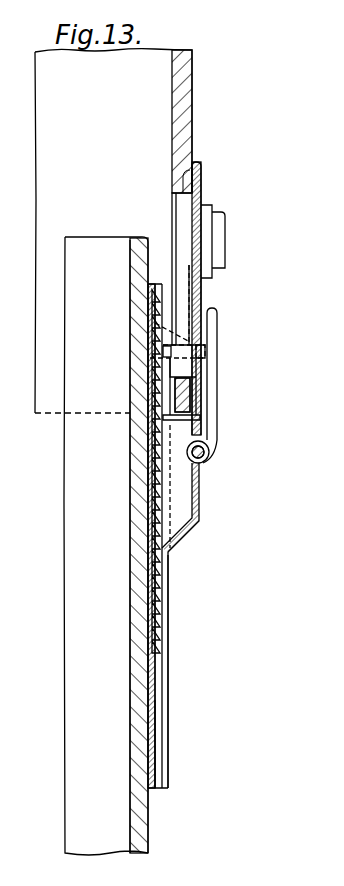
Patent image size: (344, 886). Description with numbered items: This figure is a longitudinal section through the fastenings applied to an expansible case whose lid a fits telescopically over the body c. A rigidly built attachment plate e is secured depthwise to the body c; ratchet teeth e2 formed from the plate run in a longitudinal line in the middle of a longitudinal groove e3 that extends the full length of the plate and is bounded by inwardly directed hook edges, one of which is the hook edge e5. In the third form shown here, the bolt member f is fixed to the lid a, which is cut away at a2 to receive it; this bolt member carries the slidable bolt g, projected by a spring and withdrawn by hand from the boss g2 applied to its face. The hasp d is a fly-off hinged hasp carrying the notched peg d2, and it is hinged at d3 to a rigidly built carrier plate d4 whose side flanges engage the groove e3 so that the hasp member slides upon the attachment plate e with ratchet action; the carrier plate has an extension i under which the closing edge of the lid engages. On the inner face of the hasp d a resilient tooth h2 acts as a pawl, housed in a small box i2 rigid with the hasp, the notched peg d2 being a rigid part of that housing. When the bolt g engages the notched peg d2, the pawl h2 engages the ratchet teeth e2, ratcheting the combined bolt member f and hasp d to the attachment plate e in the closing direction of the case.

The lid a is at (111, 193).
The cut-away a2 is at (183, 192).
The body c is at (138, 541).
The bolt member f is at (174, 211).
The bolt g is at (196, 301).
The boss g2 is at (230, 231).
The hasp d is at (228, 356).
The notched peg d2 is at (156, 323).
The hinge d3 is at (209, 452).
The carrier plate d4 is at (220, 484).
The resilient tooth h2 is at (161, 352).
The extension i is at (206, 412).
The box i2 is at (164, 358).
The attachment plate e is at (174, 578).
The ratchet teeth e2 is at (157, 610).
The longitudinal groove e3 is at (152, 752).
The hook edge e5 is at (172, 690).